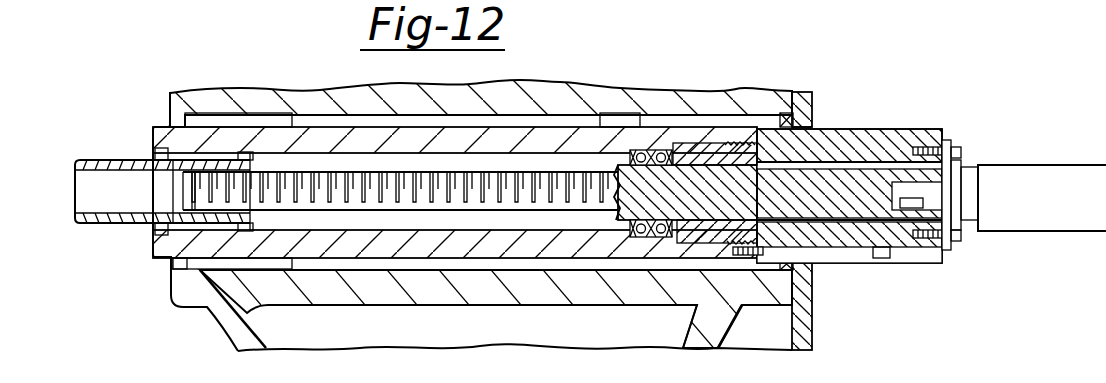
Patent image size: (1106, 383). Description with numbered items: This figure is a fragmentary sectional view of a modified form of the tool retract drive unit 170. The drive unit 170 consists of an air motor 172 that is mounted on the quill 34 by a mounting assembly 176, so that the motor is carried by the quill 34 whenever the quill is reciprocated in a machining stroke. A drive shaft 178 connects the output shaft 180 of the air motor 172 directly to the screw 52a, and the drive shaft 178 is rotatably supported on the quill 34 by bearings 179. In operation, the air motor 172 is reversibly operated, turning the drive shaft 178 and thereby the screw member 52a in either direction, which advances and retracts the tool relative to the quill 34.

The quill 34 is at (560, 137).
The screw 52a is at (487, 202).
The tool retract drive unit 170 is at (205, 322).
The air motor 172 is at (1068, 207).
The mounting assembly 176 is at (884, 127).
The drive shaft 178 is at (840, 195).
The bearings 179 is at (643, 238).
The output shaft 180 is at (928, 192).